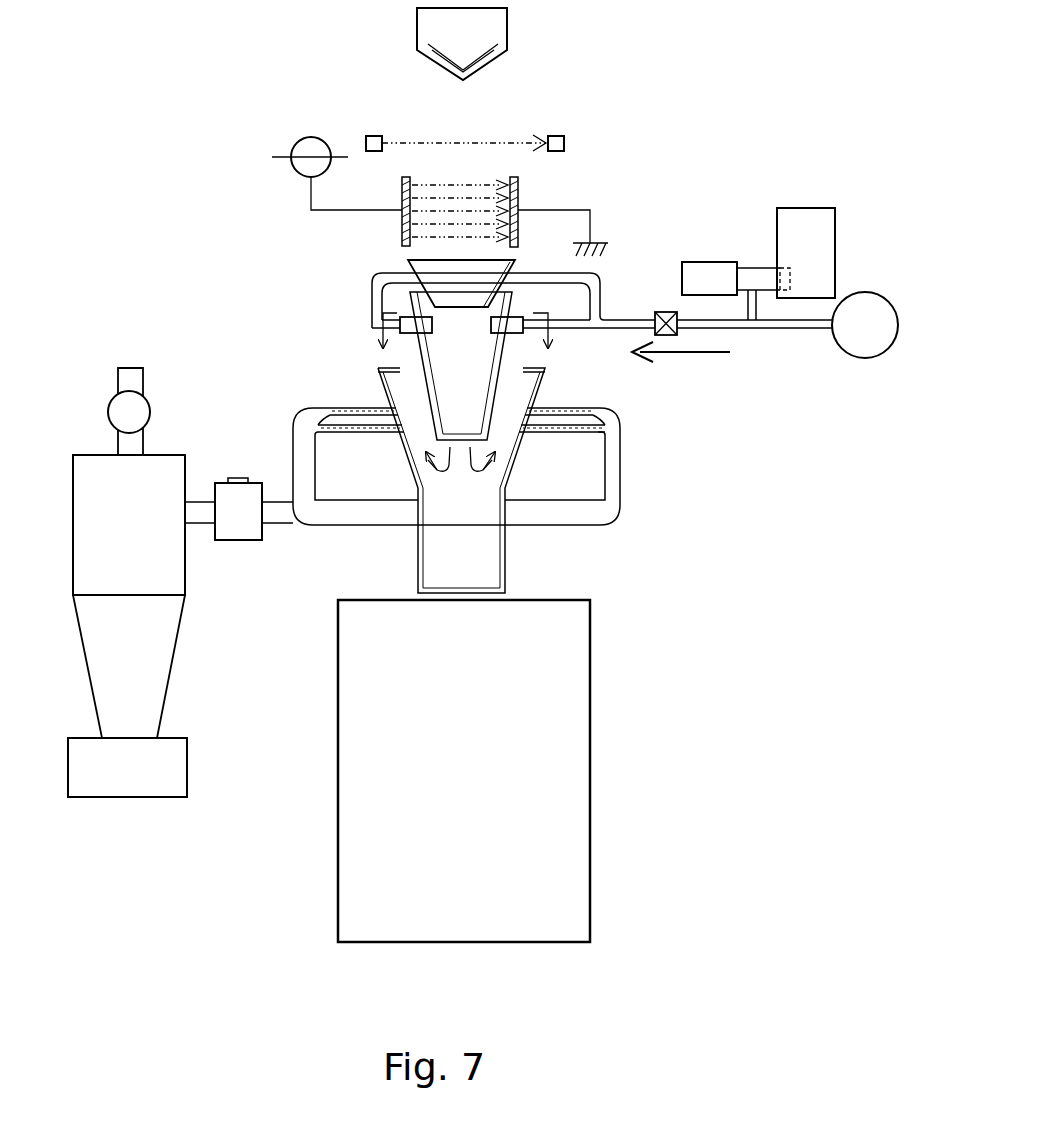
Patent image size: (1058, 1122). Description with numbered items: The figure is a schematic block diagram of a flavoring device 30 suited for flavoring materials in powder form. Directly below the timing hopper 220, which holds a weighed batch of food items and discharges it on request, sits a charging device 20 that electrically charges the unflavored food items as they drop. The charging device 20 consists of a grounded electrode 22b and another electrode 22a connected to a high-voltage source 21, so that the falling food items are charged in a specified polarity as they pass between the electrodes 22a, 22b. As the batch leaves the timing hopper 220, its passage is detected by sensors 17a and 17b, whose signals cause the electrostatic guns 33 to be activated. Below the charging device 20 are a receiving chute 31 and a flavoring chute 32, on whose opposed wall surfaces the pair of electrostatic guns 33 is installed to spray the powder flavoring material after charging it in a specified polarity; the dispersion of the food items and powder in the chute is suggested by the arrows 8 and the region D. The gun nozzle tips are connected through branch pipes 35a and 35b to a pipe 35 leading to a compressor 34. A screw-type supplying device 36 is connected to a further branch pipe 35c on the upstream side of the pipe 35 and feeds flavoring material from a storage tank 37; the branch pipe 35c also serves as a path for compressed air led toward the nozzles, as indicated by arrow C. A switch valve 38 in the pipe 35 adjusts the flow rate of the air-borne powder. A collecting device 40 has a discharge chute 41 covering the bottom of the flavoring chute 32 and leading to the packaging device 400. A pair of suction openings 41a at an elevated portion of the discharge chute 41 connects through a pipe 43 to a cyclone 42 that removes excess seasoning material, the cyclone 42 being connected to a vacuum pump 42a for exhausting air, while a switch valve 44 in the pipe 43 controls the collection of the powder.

The charging device 20 is at (675, 128).
The flavoring device 30 is at (203, 92).
The collecting device 40 is at (185, 358).
The timing hopper 220 is at (495, 33).
The high-voltage source 21 is at (303, 142).
The sensor 17a is at (370, 135).
The sensor 17b is at (563, 137).
The electrode 22a is at (402, 228).
The grounded electrode 22b is at (518, 200).
The receiving chute 31 is at (508, 266).
The flavoring chute 32 is at (490, 408).
The electrostatic gun 33 is at (491, 330).
The gas flow 8 is at (450, 340).
The pipe 35 is at (610, 323).
The branch pipe 35a is at (567, 325).
The branch pipe 35b is at (597, 302).
The branch pipe 35c is at (754, 307).
The screw-type supplying device 36 is at (757, 278).
The storage tank 37 is at (802, 223).
The switch valve 38 is at (664, 312).
The compressor 34 is at (860, 352).
The arrow C is at (681, 361).
The dispersion chamber D is at (459, 504).
The discharge chute 41 is at (506, 563).
The suction opening 41a is at (383, 426).
The pipe 43 is at (340, 518).
The switch valve 44 is at (247, 535).
The cyclone 42 is at (177, 475).
The vacuum pump 42a is at (153, 405).
The packaging device 400 is at (580, 700).